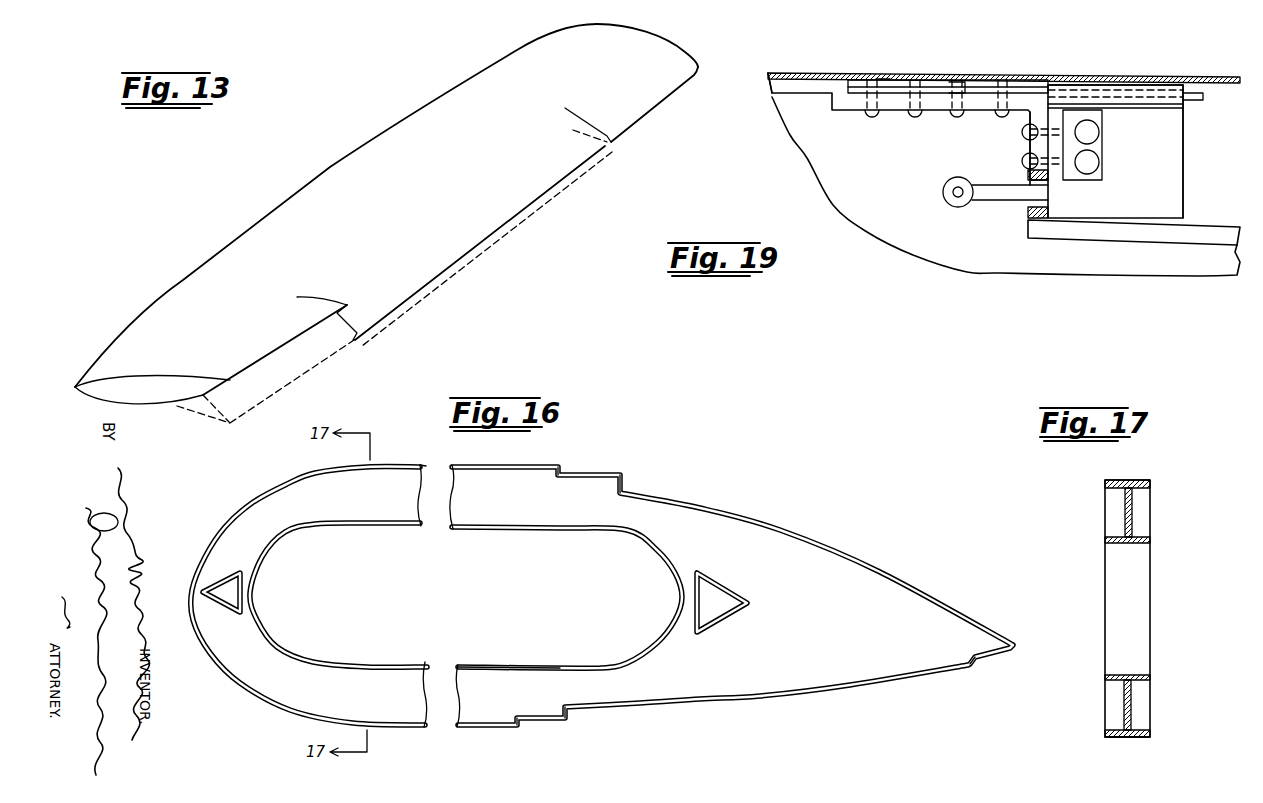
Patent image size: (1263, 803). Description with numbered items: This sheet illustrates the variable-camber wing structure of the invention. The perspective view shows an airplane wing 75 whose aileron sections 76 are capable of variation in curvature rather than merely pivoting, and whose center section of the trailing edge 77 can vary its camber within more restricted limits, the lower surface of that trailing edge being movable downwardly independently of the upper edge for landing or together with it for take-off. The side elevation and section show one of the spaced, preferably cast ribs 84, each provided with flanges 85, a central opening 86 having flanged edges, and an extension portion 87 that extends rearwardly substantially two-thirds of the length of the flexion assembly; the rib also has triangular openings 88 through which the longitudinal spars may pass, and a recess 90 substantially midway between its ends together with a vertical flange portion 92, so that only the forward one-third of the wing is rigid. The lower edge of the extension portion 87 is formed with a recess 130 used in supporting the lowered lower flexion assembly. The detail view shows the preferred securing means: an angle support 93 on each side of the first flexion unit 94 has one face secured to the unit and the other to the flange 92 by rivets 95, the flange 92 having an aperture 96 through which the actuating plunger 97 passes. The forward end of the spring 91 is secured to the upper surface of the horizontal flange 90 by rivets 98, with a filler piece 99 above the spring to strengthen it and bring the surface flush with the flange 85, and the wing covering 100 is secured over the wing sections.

In FIG. 13, the airplane wing 75 is at (386, 223).
In FIG. 13, the aileron sections 76 is at (632, 127).
In FIG. 13, the center section of the trailing edge 77 is at (487, 232).
In FIG. 19, the rib 84 is at (1004, 174).
In FIG. 16, the rib 84 is at (309, 596).
In FIG. 17, the rib 84 is at (1133, 573).
In FIG. 19, the flanges 85 is at (773, 97).
In FIG. 16, the flanges 85 is at (415, 727).
In FIG. 17, the flanges 85 is at (1137, 738).
In FIG. 16, the central opening 86 is at (520, 663).
In FIG. 17, the central opening 86 is at (1137, 675).
In FIG. 16, the extension portion 87 is at (731, 596).
In FIG. 16, the triangular openings 88 is at (225, 573).
In FIG. 19, the recess 90 is at (893, 95).
In FIG. 16, the recess 90 is at (588, 472).
In FIG. 19, the spring 91 is at (1022, 90).
In FIG. 19, the vertical flange portion 92 is at (1022, 147).
In FIG. 16, the vertical flange portion 92 is at (625, 485).
In FIG. 19, the angle support 93 is at (1103, 145).
In FIG. 19, the first flexion unit 94 is at (1156, 151).
In FIG. 19, the rivets 95 is at (1070, 168).
In FIG. 19, the aperture 96 is at (1028, 212).
In FIG. 19, the actuating plunger 97 is at (973, 205).
In FIG. 19, the rivets 98 is at (953, 120).
In FIG. 19, the filler piece 99 is at (933, 80).
In FIG. 19, the wing covering 100 is at (882, 72).
In FIG. 16, the recess 130 is at (993, 652).